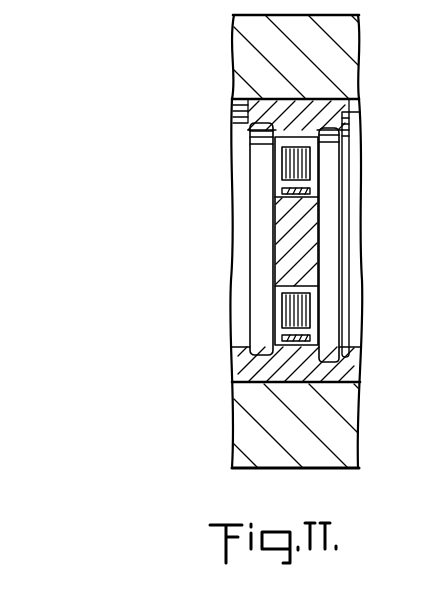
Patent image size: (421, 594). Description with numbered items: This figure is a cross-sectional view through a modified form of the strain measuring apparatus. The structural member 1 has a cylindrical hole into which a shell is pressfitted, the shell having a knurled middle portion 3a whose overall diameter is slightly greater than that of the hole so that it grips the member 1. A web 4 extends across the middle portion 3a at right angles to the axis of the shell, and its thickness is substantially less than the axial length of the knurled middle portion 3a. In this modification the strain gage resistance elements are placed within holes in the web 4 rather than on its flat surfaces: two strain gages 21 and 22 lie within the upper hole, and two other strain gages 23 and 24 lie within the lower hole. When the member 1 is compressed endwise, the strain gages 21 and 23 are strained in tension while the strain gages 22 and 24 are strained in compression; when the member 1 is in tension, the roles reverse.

The member 1 is at (247, 46).
The middle portion 3a is at (298, 372).
The web 4 is at (278, 237).
The strain gage 21 is at (282, 158).
The strain gage 22 is at (282, 190).
The strain gage 23 is at (282, 300).
The strain gage 24 is at (282, 338).